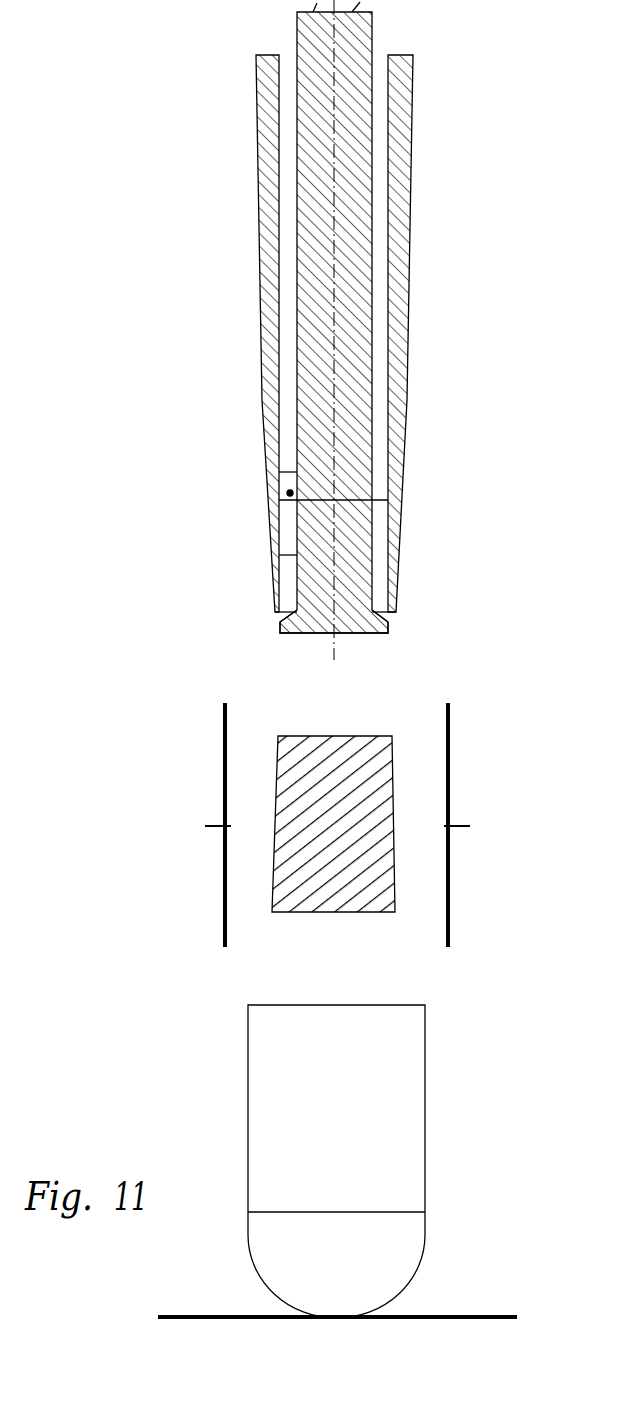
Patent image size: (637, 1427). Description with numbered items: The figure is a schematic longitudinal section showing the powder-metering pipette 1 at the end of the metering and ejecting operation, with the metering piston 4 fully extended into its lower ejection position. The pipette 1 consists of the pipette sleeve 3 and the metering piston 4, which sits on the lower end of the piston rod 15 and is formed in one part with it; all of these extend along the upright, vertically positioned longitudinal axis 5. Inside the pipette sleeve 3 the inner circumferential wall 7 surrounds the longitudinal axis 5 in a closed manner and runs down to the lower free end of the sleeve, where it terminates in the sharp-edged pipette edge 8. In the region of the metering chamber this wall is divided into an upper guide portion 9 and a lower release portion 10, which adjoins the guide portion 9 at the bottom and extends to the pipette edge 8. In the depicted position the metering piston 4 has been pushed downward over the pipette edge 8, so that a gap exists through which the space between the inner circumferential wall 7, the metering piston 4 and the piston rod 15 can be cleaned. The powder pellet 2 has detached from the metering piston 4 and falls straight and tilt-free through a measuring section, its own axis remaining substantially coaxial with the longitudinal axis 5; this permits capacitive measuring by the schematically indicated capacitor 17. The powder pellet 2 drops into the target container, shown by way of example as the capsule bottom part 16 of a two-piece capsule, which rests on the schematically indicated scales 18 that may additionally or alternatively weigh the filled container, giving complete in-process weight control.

The pipette 1 is at (447, 148).
The powder pellet 2 is at (358, 845).
The pipette sleeve 3 is at (410, 290).
The metering piston 4 is at (377, 627).
The longitudinal axis 5 is at (333, 193).
The inner circumferential wall 7 is at (290, 493).
The pipette edge 8 is at (275, 613).
The guide portion 9 is at (279, 472).
The release portion 10 is at (279, 555).
The piston rod 15 is at (345, 238).
The capsule bottom part 16 is at (248, 1093).
The capacitor 17 is at (200, 885).
The scales 18 is at (462, 1316).